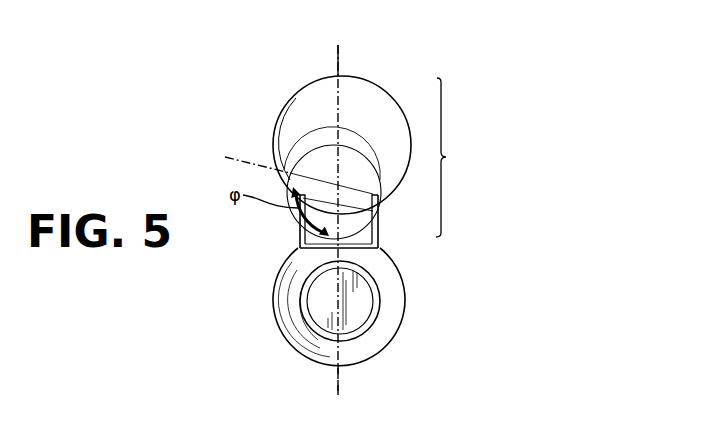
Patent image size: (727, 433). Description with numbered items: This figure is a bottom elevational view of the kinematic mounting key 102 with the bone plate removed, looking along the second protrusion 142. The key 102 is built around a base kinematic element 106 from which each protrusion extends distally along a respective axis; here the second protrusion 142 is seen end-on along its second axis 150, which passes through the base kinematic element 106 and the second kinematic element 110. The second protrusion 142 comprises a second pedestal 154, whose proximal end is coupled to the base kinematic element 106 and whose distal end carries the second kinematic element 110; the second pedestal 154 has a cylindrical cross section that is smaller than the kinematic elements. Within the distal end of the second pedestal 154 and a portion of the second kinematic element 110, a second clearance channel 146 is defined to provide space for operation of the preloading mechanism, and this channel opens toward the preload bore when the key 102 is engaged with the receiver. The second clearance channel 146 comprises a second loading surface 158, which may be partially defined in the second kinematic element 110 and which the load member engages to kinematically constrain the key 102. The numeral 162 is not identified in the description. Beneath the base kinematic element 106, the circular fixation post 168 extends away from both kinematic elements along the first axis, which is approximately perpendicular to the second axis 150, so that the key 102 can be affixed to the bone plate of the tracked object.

The key 102 is at (433, 220).
The base kinematic element 106 is at (387, 307).
The second kinematic element 110 is at (375, 110).
The second protrusion 142 is at (460, 157).
The second clearance channel 146 is at (390, 223).
The second axis 150 is at (340, 376).
The second pedestal 154 is at (300, 233).
The second loading surface 158 is at (326, 154).
The longitudinal axis 162 is at (352, 66).
The fixation post 168 is at (360, 315).